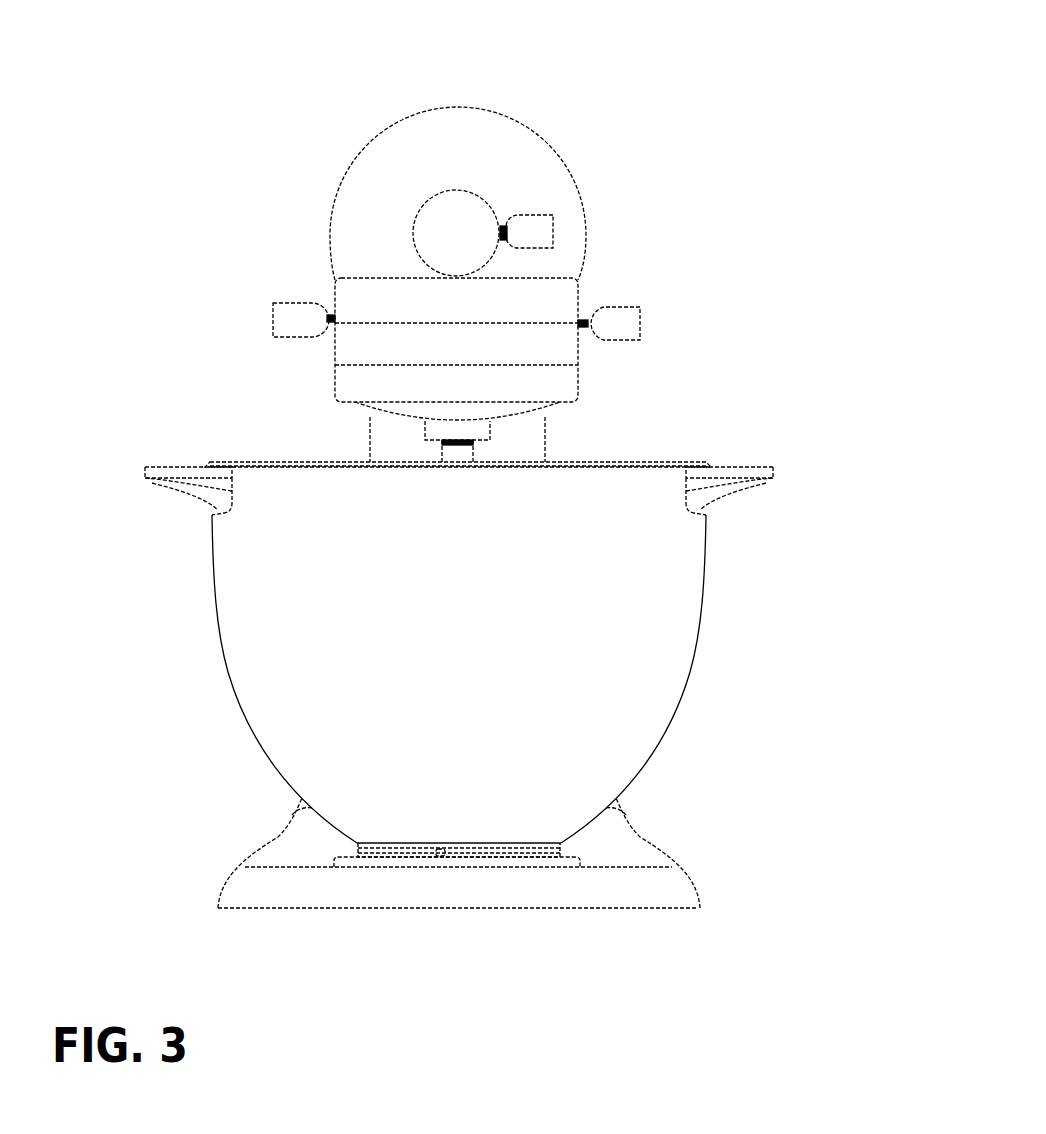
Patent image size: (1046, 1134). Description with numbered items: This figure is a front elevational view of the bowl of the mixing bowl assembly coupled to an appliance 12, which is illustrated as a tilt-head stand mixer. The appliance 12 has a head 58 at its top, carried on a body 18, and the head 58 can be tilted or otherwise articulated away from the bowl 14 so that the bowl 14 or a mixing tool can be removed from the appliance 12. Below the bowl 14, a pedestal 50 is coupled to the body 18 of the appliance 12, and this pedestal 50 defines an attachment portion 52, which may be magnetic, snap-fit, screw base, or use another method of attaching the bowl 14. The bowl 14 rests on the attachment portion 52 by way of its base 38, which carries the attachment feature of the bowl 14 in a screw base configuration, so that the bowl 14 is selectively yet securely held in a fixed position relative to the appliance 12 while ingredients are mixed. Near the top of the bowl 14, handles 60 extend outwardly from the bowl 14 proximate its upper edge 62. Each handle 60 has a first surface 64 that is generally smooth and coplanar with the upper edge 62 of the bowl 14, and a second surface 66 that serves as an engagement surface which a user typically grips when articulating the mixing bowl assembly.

The appliance 12 is at (456, 216).
The head 58 is at (472, 160).
The body 18 is at (547, 437).
The upper edge 62 is at (625, 462).
The handles 60 is at (461, 481).
The first surface 64 is at (166, 467).
The second surface 66 is at (165, 490).
The bowl 14 is at (290, 660).
The attachment portion 52 is at (345, 858).
The pedestal 50 is at (459, 851).
The base 38 is at (488, 850).